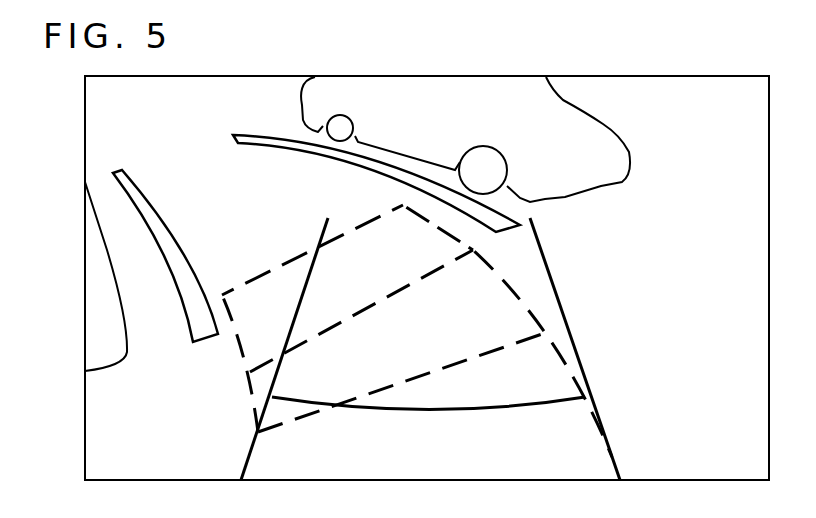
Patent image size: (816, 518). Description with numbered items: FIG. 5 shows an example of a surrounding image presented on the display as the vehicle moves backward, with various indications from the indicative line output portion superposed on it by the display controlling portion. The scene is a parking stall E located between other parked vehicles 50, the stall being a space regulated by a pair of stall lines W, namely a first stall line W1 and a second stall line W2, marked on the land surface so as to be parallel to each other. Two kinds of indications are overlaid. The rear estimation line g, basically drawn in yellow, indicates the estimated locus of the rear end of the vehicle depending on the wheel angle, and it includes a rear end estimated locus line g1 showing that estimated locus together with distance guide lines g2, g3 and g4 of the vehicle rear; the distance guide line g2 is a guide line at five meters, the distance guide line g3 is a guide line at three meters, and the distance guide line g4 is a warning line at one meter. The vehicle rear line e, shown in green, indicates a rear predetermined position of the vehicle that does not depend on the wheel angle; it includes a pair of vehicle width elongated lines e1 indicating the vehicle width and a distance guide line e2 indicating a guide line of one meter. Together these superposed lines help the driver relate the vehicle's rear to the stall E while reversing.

The other parked vehicle 50 is at (599, 132).
The stall line W is at (398, 223).
The first stall line W1 is at (503, 223).
The second stall line W2 is at (138, 190).
The parking stall E is at (262, 210).
The vehicle rear line e is at (438, 349).
The vehicle width elongated line e1 is at (292, 328).
The distance guide line e2 is at (467, 410).
The rear estimation line g is at (390, 338).
The rear end estimated locus line g1 is at (228, 295).
The distance guide line g2 is at (363, 229).
The distance guide line g3 is at (328, 332).
The distance guide line g4 is at (392, 390).